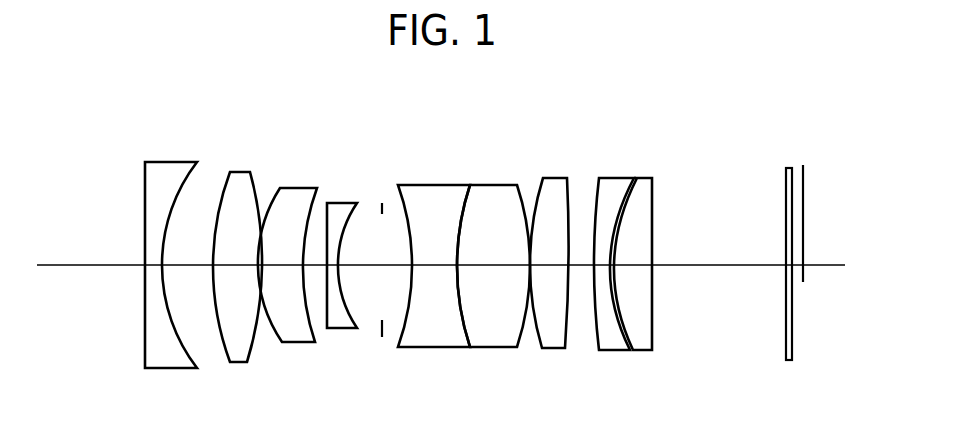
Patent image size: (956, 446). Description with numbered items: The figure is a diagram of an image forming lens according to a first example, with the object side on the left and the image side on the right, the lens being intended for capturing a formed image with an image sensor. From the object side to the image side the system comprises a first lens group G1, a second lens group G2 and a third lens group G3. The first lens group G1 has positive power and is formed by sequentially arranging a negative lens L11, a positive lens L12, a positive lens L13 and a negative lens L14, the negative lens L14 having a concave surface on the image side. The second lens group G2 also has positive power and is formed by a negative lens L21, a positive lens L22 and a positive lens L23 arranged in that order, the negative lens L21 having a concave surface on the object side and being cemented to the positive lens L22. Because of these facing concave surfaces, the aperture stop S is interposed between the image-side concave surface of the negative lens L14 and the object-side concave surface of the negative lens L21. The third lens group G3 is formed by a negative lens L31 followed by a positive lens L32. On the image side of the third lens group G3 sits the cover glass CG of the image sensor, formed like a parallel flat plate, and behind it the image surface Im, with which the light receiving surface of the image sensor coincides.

The first lens group G1 is at (135, 147).
The second lens group G2 is at (400, 147).
The third lens group G3 is at (578, 147).
The negative lens L11 is at (172, 366).
The positive lens L12 is at (240, 358).
The positive lens L13 is at (290, 339).
The negative lens L14 is at (342, 326).
The negative lens L21 is at (435, 343).
The positive lens L22 is at (497, 343).
The positive lens L23 is at (553, 346).
The negative lens L31 is at (615, 347).
The positive lens L32 is at (643, 347).
The aperture stop S is at (382, 200).
The cover glass CG is at (787, 166).
The image surface Im is at (804, 166).